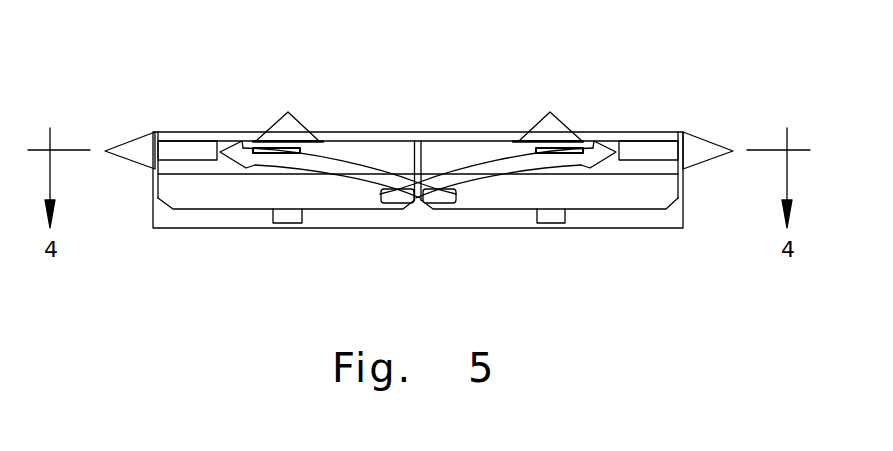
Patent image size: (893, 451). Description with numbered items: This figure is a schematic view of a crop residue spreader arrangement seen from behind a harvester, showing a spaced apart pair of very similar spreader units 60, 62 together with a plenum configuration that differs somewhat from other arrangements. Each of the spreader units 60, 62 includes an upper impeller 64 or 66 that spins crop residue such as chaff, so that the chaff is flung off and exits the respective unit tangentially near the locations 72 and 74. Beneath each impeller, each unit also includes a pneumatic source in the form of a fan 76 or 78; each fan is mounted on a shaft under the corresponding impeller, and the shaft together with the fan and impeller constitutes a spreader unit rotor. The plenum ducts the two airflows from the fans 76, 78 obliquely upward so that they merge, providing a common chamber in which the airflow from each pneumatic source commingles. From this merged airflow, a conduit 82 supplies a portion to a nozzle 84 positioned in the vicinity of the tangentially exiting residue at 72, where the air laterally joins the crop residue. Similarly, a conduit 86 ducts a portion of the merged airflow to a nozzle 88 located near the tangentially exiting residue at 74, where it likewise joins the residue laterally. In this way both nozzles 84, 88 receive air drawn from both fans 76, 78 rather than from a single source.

The spreader unit 60 is at (181, 78).
The spreader unit 62 is at (670, 76).
The upper impeller 64 is at (382, 153).
The upper impeller 66 is at (438, 148).
The tangentially exiting residue location 72 is at (231, 141).
The tangentially exiting residue location 74 is at (605, 148).
The fan 76 is at (322, 200).
The fan 78 is at (618, 197).
The conduit 82 is at (339, 146).
The nozzle 84 is at (245, 168).
The conduit 86 is at (503, 160).
The nozzle 88 is at (590, 147).